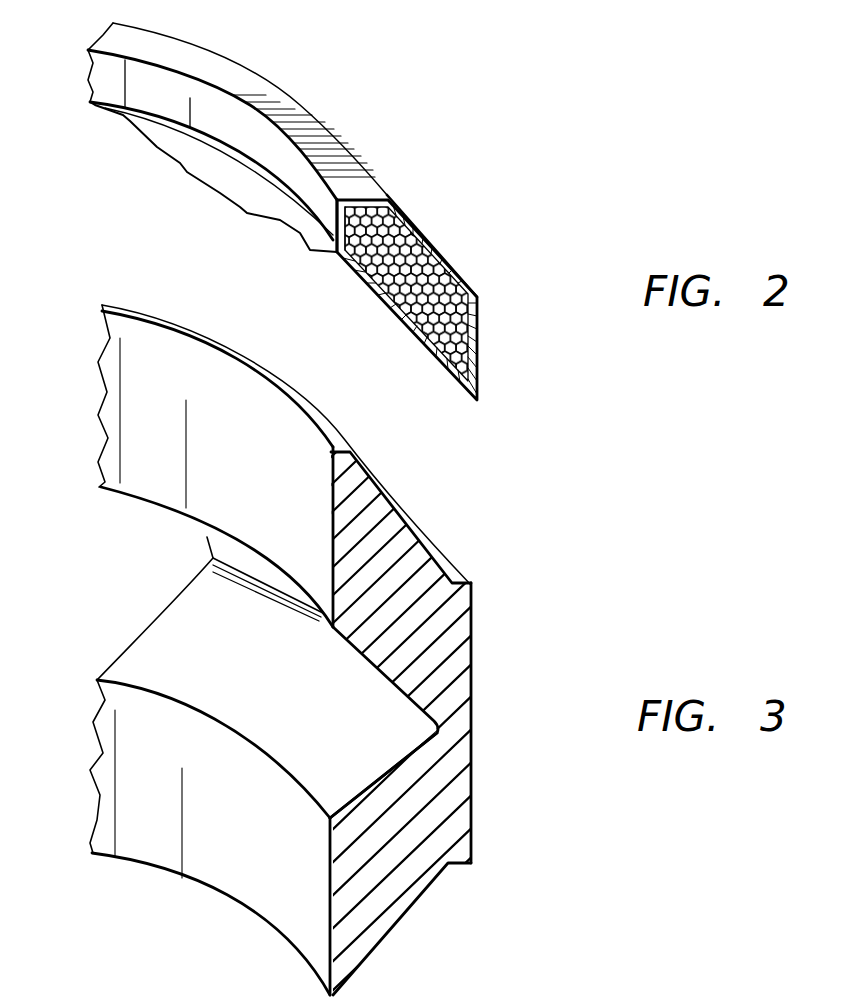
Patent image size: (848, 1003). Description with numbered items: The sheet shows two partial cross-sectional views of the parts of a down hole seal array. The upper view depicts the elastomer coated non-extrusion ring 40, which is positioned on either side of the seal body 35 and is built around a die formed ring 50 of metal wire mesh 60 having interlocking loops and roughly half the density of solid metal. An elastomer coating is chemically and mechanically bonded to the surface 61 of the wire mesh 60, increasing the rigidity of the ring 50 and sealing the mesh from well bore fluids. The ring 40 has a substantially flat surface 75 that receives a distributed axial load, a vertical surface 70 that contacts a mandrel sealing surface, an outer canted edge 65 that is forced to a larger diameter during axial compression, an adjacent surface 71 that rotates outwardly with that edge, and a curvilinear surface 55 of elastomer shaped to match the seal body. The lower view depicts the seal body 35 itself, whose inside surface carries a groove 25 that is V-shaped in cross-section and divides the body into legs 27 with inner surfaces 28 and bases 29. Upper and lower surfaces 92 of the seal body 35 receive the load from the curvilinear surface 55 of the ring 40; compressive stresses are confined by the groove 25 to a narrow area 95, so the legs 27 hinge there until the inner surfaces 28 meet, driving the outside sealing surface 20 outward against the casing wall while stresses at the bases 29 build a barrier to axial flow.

In FIG. 2, the flat surface 75 is at (327, 143).
In FIG. 2, the vertical surface 70 is at (340, 230).
In FIG. 2, the elastomer coated non-extrusion ring 40 is at (462, 194).
In FIG. 2, the curvilinear surface 55 is at (397, 315).
In FIG. 2, the die formed ring 50 is at (479, 298).
In FIG. 2, the wire mesh 60 is at (470, 322).
In FIG. 2, the surface of the wire mesh 61 is at (468, 340).
In FIG. 2, the surface 71 is at (470, 365).
In FIG. 2, the outer canted edge 65 is at (475, 400).
In FIG. 3, the base of leg 29 is at (133, 370).
In FIG. 3, the legs 27 is at (102, 408).
In FIG. 3, the inner surfaces of legs 28 is at (210, 540).
In FIG. 3, the upper and lower surfaces 92 is at (403, 520).
In FIG. 3, the seal body 35 is at (520, 610).
In FIG. 3, the outside sealing surface 20 is at (471, 688).
In FIG. 3, the narrow area 95 is at (458, 728).
In FIG. 3, the groove 25 is at (368, 738).